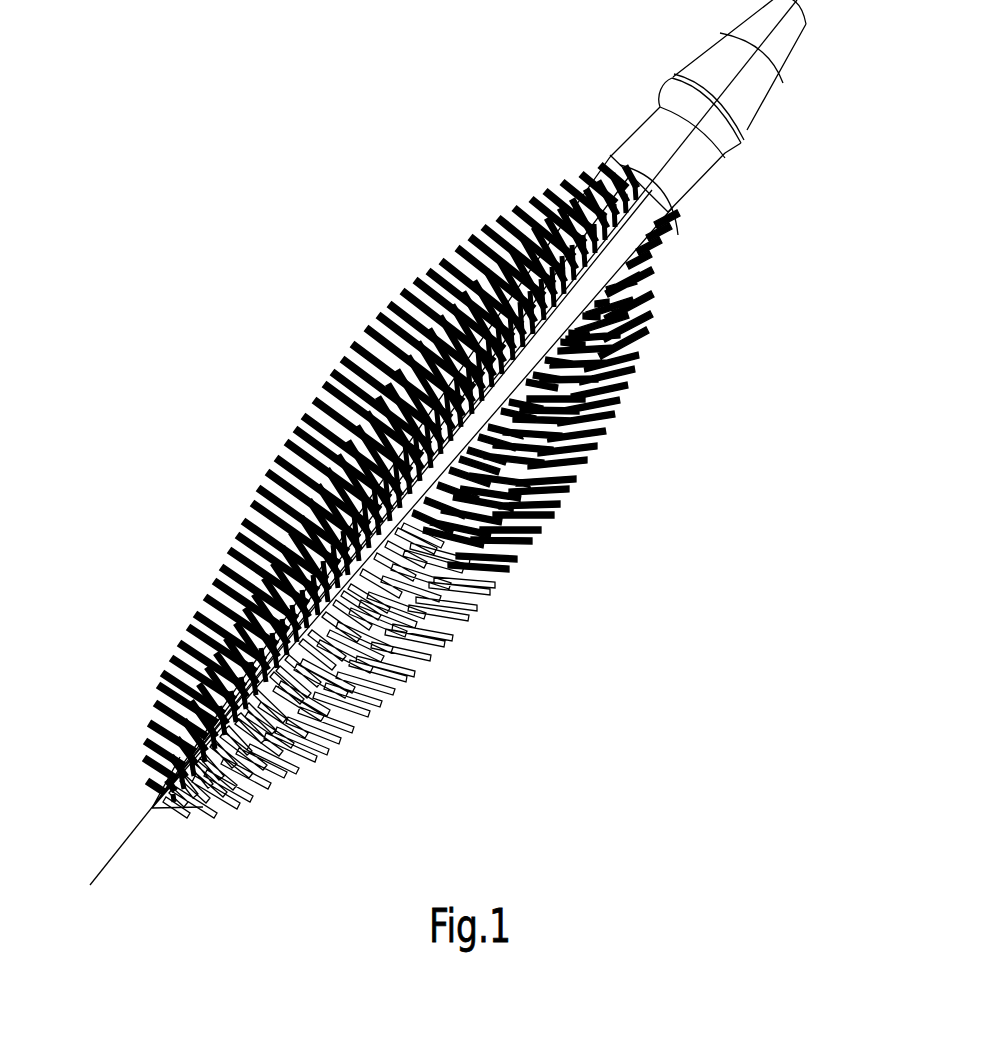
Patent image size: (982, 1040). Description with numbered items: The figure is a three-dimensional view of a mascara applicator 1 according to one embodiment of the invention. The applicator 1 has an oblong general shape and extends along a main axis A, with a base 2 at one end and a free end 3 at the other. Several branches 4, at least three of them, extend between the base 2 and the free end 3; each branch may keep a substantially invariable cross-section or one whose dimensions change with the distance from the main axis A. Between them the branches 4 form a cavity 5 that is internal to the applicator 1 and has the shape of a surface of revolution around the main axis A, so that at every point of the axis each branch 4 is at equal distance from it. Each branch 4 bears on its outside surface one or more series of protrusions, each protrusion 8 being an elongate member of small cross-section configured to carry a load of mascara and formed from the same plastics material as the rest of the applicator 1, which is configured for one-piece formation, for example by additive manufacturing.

The applicator 1 is at (418, 413).
The base 2 is at (702, 170).
The free end 3 is at (152, 812).
The branches 4 is at (308, 414).
The cavity 5 is at (560, 520).
The protrusion 8 is at (615, 420).
The main axis A is at (845, 0).